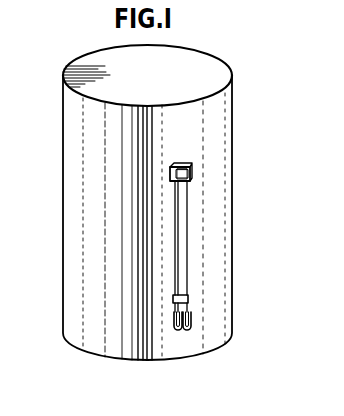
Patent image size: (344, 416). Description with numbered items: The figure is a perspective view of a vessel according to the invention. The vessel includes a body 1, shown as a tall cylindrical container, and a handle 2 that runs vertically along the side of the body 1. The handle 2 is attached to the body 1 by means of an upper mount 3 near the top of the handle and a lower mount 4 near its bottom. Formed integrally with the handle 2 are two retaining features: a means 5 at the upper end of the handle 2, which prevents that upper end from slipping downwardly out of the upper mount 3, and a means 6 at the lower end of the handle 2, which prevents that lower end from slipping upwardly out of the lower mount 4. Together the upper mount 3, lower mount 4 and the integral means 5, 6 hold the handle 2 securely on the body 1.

The body 1 is at (78, 132).
The handle 2 is at (187, 250).
The upper mount 3 is at (193, 167).
The lower mount 4 is at (188, 297).
The means for preventing the upper end of the handle from downwardly slipping out of 5 is at (176, 164).
The means for preventing the lower end of the handle from upwardly slipping out of t 6 is at (191, 322).